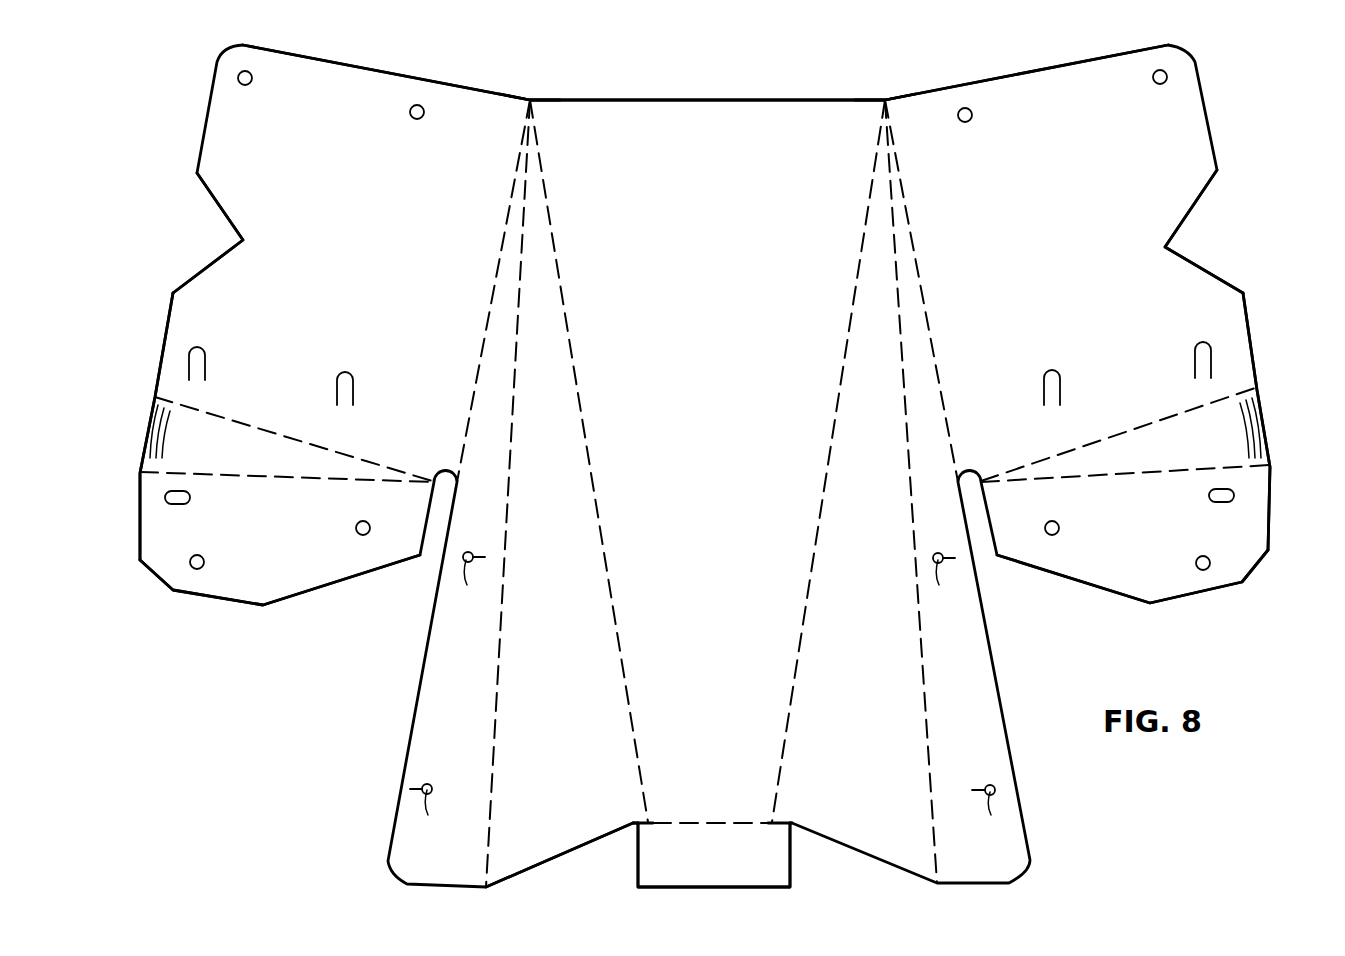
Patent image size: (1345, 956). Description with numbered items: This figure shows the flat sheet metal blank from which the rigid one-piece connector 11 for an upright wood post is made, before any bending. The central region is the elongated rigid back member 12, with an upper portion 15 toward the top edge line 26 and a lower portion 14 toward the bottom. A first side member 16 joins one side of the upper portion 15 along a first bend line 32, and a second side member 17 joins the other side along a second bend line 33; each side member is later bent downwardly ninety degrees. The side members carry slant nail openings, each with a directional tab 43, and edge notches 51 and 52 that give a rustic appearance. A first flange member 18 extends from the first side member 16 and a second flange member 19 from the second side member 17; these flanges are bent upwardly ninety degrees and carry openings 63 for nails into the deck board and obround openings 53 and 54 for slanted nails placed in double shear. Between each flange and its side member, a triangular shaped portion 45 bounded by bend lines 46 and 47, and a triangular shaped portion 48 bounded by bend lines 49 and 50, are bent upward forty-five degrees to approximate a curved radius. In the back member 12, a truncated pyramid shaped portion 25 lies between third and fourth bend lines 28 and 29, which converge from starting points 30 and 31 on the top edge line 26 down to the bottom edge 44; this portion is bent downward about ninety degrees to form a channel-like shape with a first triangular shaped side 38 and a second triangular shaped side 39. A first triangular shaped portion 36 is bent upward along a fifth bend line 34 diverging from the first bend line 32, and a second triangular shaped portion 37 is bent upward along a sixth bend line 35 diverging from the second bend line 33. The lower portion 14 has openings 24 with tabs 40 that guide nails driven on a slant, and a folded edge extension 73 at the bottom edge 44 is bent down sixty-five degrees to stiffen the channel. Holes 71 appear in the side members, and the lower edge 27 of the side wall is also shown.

The rigid one-piece connector 11 is at (1203, 108).
The elongated rigid overturning moment resistant structural back member 12 is at (778, 150).
The lower portion 14 is at (712, 762).
The upper portion 15 is at (712, 202).
The first side member 16 is at (386, 133).
The second side member 17 is at (1026, 127).
The first flange member 18 is at (317, 582).
The second flange member 19 is at (1170, 592).
The openings 24 is at (468, 565).
The truncated pyramid shaped portion 25 is at (710, 392).
The top edge line 26 is at (727, 100).
The bottom edge 27 is at (545, 878).
The third bend line 28 is at (573, 342).
The fourth bend line 29 is at (848, 323).
The first starting point 30 is at (536, 98).
The second starting point 31 is at (887, 100).
The first bend line 32 is at (470, 362).
The second bend line 33 is at (933, 347).
The fifth bend line 34 is at (495, 700).
The sixth bend line 35 is at (930, 737).
The first triangular shaped portion 36 is at (477, 509).
The second triangular shaped portion 37 is at (935, 487).
The first triangular shaped side 38 is at (549, 489).
The second triangular shaped side 39 is at (867, 490).
The tabs 40 is at (475, 553).
The directional tab 43 is at (338, 386).
The bottom edge 44 is at (687, 820).
The triangular shaped portion 45 is at (170, 426).
The bend line 46 is at (353, 453).
The bend line 47 is at (343, 480).
The triangular shaped portion 48 is at (1242, 421).
The bend line 49 is at (1080, 443).
The bend line 50 is at (1173, 470).
The notch 51 is at (218, 205).
The notch 52 is at (1200, 195).
The obround opening 53 is at (190, 497).
The obround opening 54 is at (1234, 497).
The openings 63 is at (356, 532).
The hole 71 is at (410, 112).
The folded edge extension 73 is at (760, 880).